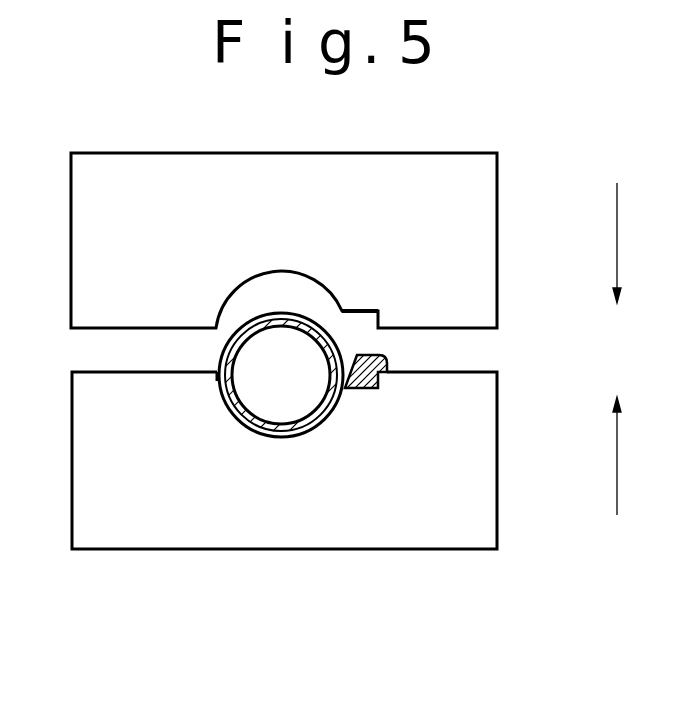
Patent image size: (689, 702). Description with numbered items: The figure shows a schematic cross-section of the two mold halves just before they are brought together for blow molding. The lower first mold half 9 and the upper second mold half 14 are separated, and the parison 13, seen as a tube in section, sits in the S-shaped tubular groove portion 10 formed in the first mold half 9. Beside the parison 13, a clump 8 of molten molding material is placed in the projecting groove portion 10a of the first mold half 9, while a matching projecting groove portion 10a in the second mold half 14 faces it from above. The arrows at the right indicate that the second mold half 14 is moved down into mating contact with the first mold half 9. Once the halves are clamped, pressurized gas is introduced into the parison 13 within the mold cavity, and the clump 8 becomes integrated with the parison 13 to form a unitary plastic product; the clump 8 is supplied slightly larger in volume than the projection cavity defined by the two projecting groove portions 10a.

The second mold half 14 is at (498, 277).
The first mold half 9 is at (498, 470).
The S-shaped tubular groove portion 10 is at (312, 273).
The projecting groove portion 10a is at (362, 309).
The parison 13 is at (247, 338).
The clump 8 is at (386, 362).